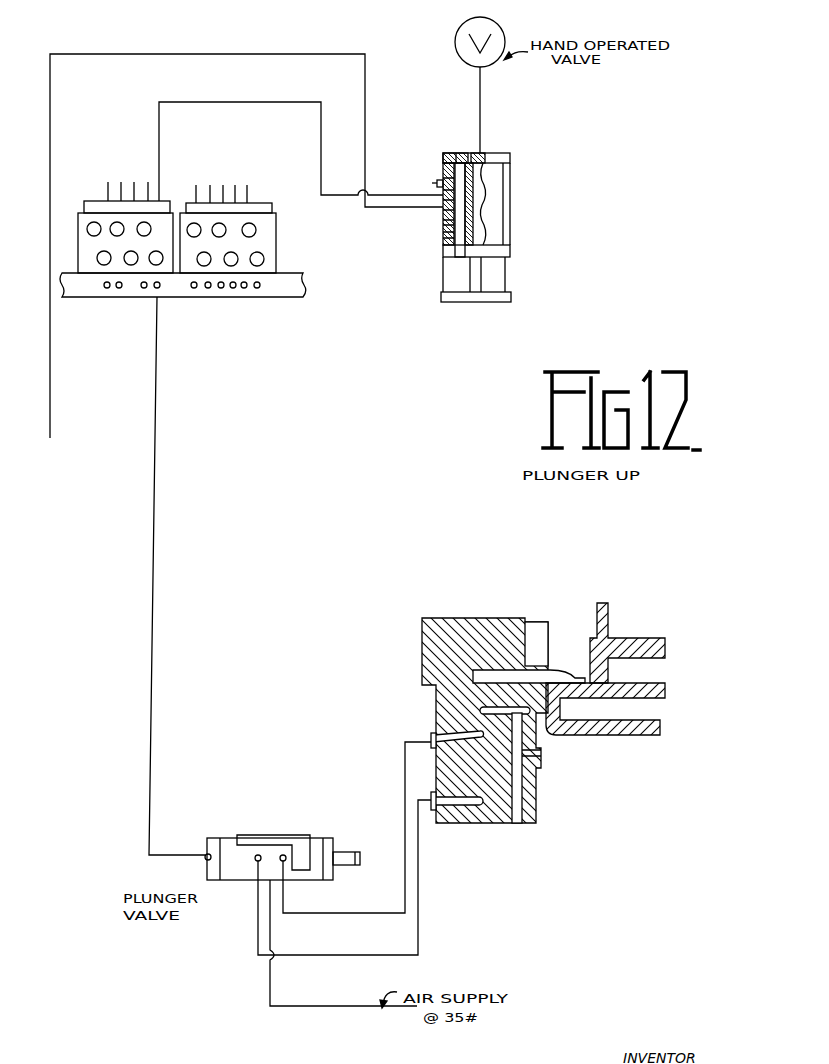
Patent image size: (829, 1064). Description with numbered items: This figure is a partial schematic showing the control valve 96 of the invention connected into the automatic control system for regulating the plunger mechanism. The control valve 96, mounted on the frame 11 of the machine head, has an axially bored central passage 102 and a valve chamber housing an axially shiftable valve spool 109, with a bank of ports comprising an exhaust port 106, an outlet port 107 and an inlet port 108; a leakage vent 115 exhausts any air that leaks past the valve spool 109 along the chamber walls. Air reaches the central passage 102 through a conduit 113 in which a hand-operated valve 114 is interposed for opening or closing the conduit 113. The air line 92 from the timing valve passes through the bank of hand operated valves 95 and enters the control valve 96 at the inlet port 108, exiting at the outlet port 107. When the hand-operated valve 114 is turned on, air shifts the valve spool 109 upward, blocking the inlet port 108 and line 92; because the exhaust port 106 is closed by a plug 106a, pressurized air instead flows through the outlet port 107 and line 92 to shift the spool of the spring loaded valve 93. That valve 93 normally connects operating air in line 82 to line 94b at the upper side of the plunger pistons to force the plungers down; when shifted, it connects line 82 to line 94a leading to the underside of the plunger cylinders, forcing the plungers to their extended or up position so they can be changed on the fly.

The frame 11 is at (303, 283).
The operating air line 82 is at (323, 1008).
The air line 92 is at (276, 53).
The spring loaded valve 93 is at (228, 843).
The line to underside of plunger cylinders 94a is at (420, 928).
The line to upper side of plunger cylinders 94b is at (396, 896).
The bank of hand operated valves 95 is at (78, 222).
The control valve 96 is at (474, 212).
The central passage 102 is at (477, 229).
The exhaust port 106 is at (472, 138).
The plug 106a is at (430, 183).
The outlet port 107 is at (441, 193).
The inlet port 108 is at (443, 213).
The valve spool 109 is at (460, 240).
The conduit 113 is at (482, 108).
The hand-operated valve 114 is at (455, 44).
The leakage vent 115 is at (438, 225).